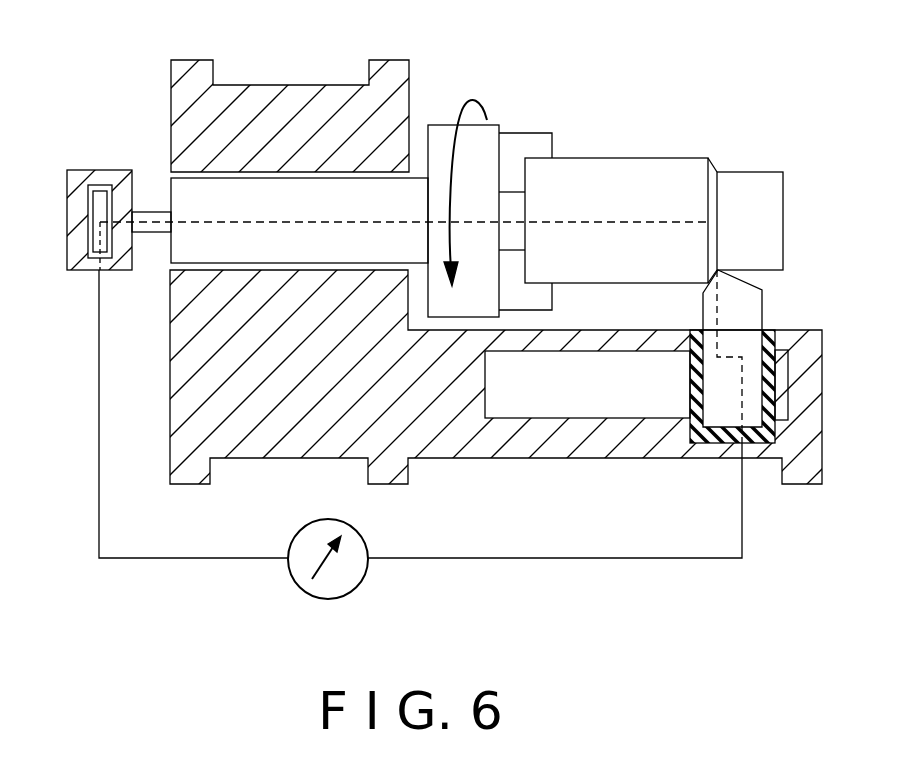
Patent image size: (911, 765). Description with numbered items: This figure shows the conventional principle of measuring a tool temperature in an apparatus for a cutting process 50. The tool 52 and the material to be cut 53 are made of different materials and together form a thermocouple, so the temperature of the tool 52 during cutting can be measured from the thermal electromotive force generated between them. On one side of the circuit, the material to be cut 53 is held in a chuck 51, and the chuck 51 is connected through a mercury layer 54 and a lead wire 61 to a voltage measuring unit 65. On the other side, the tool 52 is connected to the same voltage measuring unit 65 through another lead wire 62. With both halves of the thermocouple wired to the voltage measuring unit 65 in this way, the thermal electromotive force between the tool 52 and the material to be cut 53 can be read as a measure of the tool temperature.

The apparatus for a cutting process 50 is at (715, 128).
The chuck 51 is at (438, 125).
The tool 52 is at (745, 308).
The material to be cut 53 is at (646, 158).
The mercury layer 54 is at (95, 170).
The lead wire 61 is at (98, 447).
The lead wire 62 is at (742, 530).
The voltage measuring unit 65 is at (348, 594).